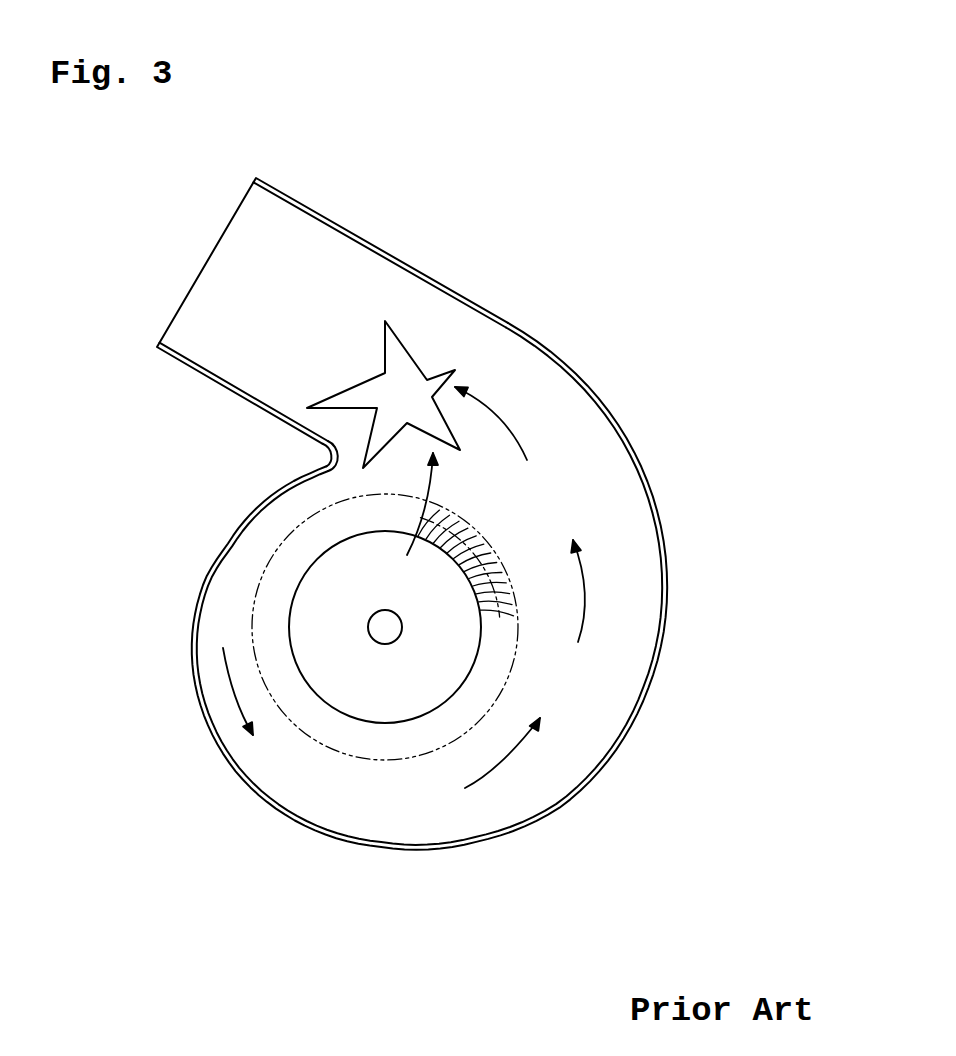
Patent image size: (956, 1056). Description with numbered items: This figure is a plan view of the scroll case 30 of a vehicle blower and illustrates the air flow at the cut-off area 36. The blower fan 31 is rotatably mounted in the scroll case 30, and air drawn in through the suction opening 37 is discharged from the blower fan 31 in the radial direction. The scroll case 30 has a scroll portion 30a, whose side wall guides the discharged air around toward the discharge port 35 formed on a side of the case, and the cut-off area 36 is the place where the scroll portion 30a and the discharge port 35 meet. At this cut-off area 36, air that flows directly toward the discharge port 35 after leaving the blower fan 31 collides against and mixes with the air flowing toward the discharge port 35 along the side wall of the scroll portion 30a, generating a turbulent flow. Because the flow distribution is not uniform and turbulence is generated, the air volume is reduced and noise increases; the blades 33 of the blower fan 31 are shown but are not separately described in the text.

The scroll case 30 is at (684, 562).
The scroll portion 30a is at (200, 590).
The blower fan 31 is at (364, 758).
The blades 33 is at (507, 600).
The discharge port 35 is at (218, 268).
The cut-off area 36 is at (327, 455).
The suction opening 37 is at (315, 688).